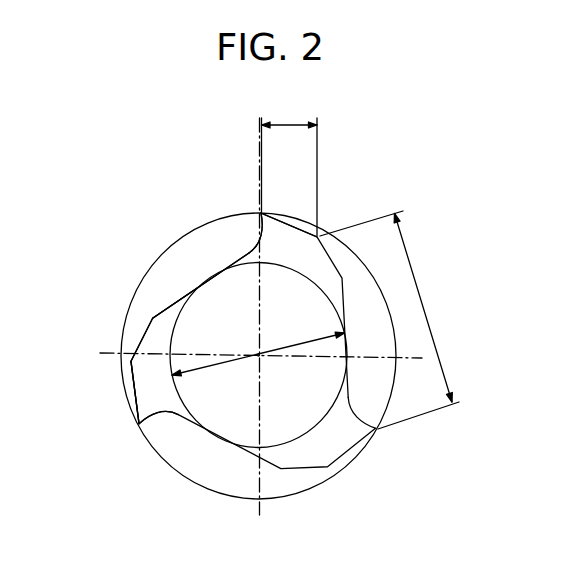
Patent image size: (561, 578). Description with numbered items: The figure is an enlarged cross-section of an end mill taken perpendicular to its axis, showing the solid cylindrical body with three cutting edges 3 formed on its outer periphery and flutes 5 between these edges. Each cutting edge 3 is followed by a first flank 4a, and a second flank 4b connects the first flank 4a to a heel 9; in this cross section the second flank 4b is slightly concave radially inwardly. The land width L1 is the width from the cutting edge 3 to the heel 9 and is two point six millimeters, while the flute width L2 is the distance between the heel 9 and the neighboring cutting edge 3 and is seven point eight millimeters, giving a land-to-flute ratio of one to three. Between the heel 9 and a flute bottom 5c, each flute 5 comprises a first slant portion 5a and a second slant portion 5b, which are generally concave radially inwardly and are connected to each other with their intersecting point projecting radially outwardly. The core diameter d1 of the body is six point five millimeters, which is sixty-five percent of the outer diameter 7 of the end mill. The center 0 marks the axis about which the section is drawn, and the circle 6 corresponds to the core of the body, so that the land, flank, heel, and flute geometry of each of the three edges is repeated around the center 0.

The rotation center 0 is at (258, 355).
The cutting edge 3 is at (246, 214).
The flute 5 is at (200, 248).
The first slant portion 5a is at (145, 328).
The second slant portion 5b is at (178, 300).
The flute bottom 5c is at (217, 270).
The first flank 4a is at (140, 422).
The second flank 4b is at (133, 363).
The heel 9 is at (317, 237).
The hub 6 is at (233, 418).
The outer diameter 7 is at (148, 448).
The core diameter d1 is at (268, 350).
The land width L1 is at (287, 124).
The flute width L2 is at (410, 268).